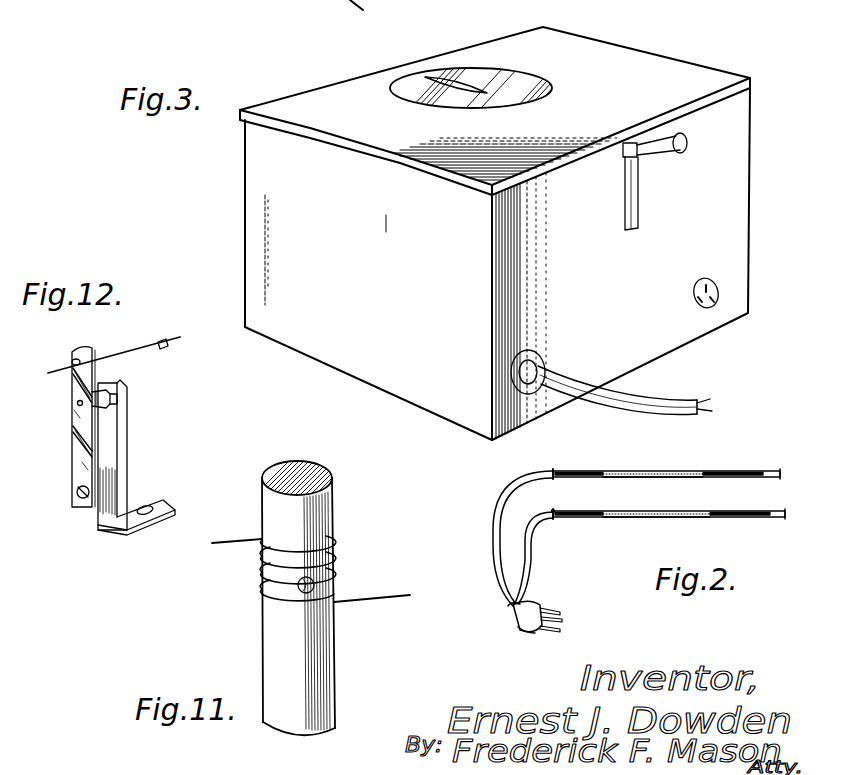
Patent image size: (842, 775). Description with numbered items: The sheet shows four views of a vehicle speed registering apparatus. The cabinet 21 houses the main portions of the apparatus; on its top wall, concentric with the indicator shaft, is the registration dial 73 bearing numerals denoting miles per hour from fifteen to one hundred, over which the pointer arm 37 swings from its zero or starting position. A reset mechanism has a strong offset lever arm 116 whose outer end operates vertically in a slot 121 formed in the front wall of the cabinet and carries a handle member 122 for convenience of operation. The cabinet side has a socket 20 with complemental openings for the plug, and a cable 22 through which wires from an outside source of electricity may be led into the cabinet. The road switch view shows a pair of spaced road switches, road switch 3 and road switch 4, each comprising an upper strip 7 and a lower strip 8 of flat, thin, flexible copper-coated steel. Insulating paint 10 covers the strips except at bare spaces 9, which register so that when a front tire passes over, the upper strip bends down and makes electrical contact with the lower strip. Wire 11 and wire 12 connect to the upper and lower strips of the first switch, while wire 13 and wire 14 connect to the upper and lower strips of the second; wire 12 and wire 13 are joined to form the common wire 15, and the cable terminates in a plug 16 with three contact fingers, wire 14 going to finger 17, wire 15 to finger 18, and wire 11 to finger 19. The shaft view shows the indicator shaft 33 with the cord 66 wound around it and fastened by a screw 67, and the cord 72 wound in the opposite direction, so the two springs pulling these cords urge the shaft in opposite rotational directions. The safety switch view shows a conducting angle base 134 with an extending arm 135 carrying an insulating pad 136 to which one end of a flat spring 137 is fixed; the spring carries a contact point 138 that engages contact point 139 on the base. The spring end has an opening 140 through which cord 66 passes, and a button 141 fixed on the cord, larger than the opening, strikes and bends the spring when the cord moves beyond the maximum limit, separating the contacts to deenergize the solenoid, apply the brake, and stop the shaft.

In FIG. 3, the cabinet 21 is at (650, 55).
In FIG. 3, the pointer arm 37 is at (449, 73).
In FIG. 3, the registration dial 73 is at (520, 78).
In FIG. 3, the offset lever arm 116 is at (627, 145).
In FIG. 3, the slot 121 is at (625, 187).
In FIG. 3, the handle member 122 is at (683, 152).
In FIG. 3, the socket 20 is at (707, 306).
In FIG. 3, the cable 22 is at (615, 410).
In FIG. 12, the extending arm 135 is at (128, 428).
In FIG. 12, the angle base 134 is at (133, 531).
In FIG. 12, the insulating pad 136 is at (90, 510).
In FIG. 12, the flat spring 137 is at (73, 428).
In FIG. 12, the opening 140 is at (73, 360).
In FIG. 12, the contact point 138 is at (92, 398).
In FIG. 12, the contact point 139 is at (117, 397).
In FIG. 12, the cord 66 is at (121, 355).
In FIG. 11, the cord 66 is at (222, 542).
In FIG. 12, the button 141 is at (163, 340).
In FIG. 11, the indicator shaft 33 is at (322, 498).
In FIG. 11, the screw 67 is at (290, 578).
In FIG. 11, the cord 72 is at (382, 595).
In FIG. 2, the road switch 3 is at (643, 470).
In FIG. 2, the road switch 4 is at (683, 518).
In FIG. 2, the upper strip 7 is at (731, 470).
In FIG. 2, the lower strip 8 is at (745, 479).
In FIG. 2, the bare spaces 9 is at (688, 470).
In FIG. 2, the insulating paint 10 is at (580, 470).
In FIG. 2, the wire 11 is at (513, 487).
In FIG. 2, the wire 12 is at (525, 490).
In FIG. 2, the wire 13 is at (535, 520).
In FIG. 2, the wire 14 is at (523, 580).
In FIG. 2, the common wire 15 is at (510, 608).
In FIG. 2, the plug 16 is at (524, 631).
In FIG. 2, the contact finger 17 is at (562, 612).
In FIG. 2, the contact finger 18 is at (565, 620).
In FIG. 2, the contact finger 19 is at (563, 631).